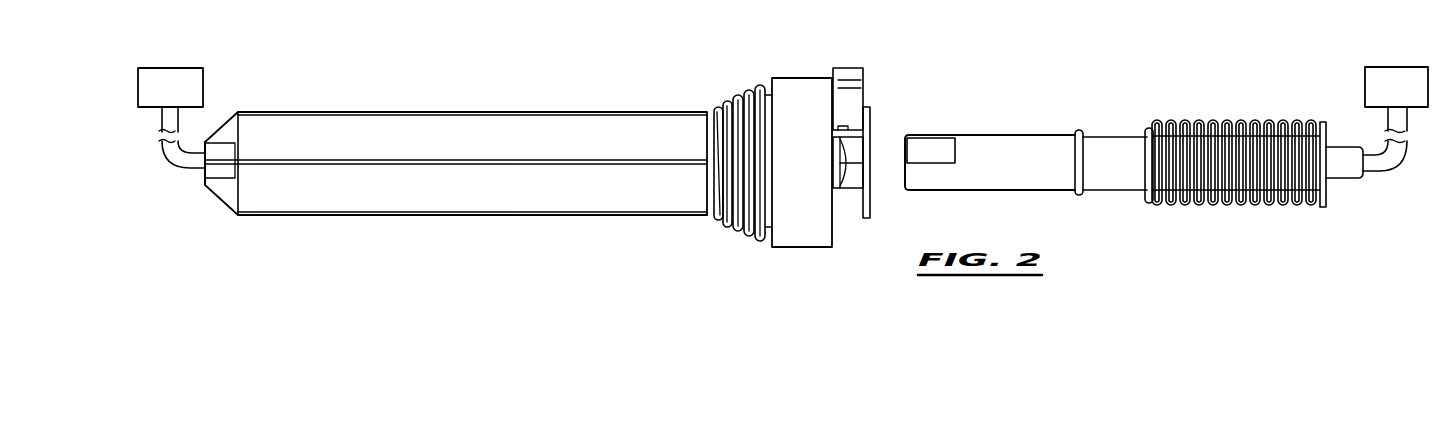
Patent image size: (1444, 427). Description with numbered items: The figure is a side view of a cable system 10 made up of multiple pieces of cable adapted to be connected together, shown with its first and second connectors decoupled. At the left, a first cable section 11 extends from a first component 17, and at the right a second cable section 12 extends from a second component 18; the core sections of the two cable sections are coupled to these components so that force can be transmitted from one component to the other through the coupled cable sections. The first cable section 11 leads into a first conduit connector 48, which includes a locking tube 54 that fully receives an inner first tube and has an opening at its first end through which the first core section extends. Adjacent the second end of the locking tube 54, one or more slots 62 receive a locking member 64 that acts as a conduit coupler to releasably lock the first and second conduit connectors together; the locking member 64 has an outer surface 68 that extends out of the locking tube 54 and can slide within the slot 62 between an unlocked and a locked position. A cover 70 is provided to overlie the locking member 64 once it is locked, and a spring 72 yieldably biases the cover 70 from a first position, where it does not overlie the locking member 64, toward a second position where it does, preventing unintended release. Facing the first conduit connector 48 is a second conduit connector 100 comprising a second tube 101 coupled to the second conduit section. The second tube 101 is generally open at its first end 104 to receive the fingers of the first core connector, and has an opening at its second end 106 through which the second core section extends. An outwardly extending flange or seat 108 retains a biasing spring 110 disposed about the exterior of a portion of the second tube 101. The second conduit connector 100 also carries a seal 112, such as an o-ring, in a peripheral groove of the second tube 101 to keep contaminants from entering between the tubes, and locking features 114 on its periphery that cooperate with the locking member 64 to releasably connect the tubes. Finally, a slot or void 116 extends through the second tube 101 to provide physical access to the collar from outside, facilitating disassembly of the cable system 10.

The cable system 10 is at (1137, 82).
The first cable section 11 is at (185, 162).
The second cable section 12 is at (1390, 162).
The first component 17 is at (203, 77).
The second component 18 is at (1367, 76).
The first conduit connector 48 is at (400, 100).
The locking tube 54 is at (334, 215).
The slot 62 is at (866, 110).
The locking member 64 is at (876, 56).
The outer surface 68 is at (845, 67).
The cover 70 is at (786, 252).
The spring 72 is at (716, 222).
The second conduit connector 100 is at (1023, 127).
The second tube 101 is at (1043, 144).
The first end 104 is at (903, 173).
The second end 106 is at (1332, 146).
The flange or seat 108 is at (1321, 203).
The spring 110 is at (1170, 203).
The seal 112 is at (1078, 195).
The locking features 114 is at (1180, 130).
The slot or void 116 is at (938, 145).